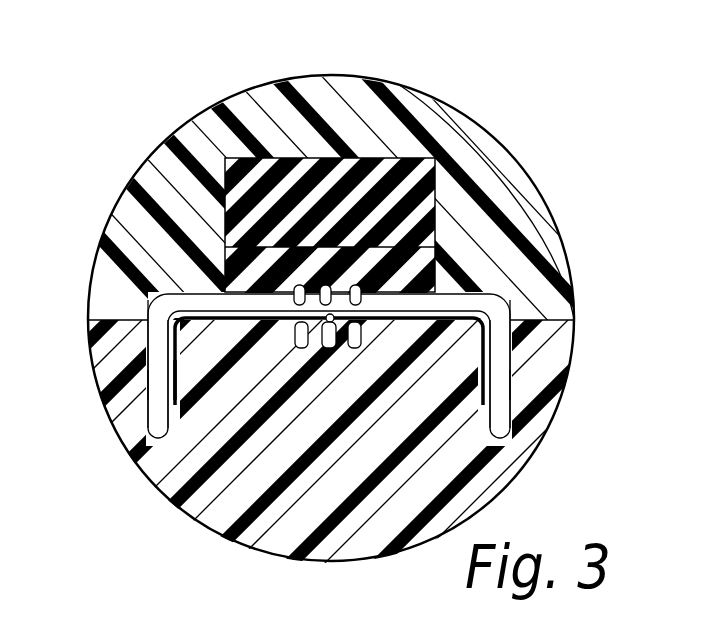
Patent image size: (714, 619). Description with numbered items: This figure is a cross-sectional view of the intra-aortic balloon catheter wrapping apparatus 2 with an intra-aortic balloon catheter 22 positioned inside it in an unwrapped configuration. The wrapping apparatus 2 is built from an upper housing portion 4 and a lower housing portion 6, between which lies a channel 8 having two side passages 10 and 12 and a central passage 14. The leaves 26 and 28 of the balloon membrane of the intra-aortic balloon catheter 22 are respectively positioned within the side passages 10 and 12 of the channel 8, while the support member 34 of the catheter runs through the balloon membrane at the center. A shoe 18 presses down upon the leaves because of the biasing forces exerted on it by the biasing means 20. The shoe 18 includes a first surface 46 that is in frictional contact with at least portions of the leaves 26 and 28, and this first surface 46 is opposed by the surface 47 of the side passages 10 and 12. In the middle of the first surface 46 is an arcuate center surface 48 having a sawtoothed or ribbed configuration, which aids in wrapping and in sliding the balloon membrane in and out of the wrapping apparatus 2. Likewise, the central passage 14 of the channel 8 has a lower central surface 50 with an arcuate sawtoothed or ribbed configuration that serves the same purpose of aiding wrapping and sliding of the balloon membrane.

The intra-aortic balloon catheter wrapping apparatus 2 is at (427, 46).
The upper housing portion 4 is at (206, 122).
The lower housing portion 6 is at (247, 543).
The channel 8 is at (458, 286).
The side passage 10 is at (158, 428).
The side passage 12 is at (500, 432).
The central passage 14 is at (361, 331).
The shoe 18 is at (430, 260).
The biasing means 20 is at (438, 173).
The intra-aortic balloon catheter 22 is at (337, 350).
The side leaf 26 is at (150, 378).
The side leaf 28 is at (498, 384).
The support member 34 is at (303, 350).
The first surface 46 is at (203, 291).
The surface 47 is at (240, 325).
The arcuate center surface 48 is at (286, 300).
The lower central surface 50 is at (248, 343).